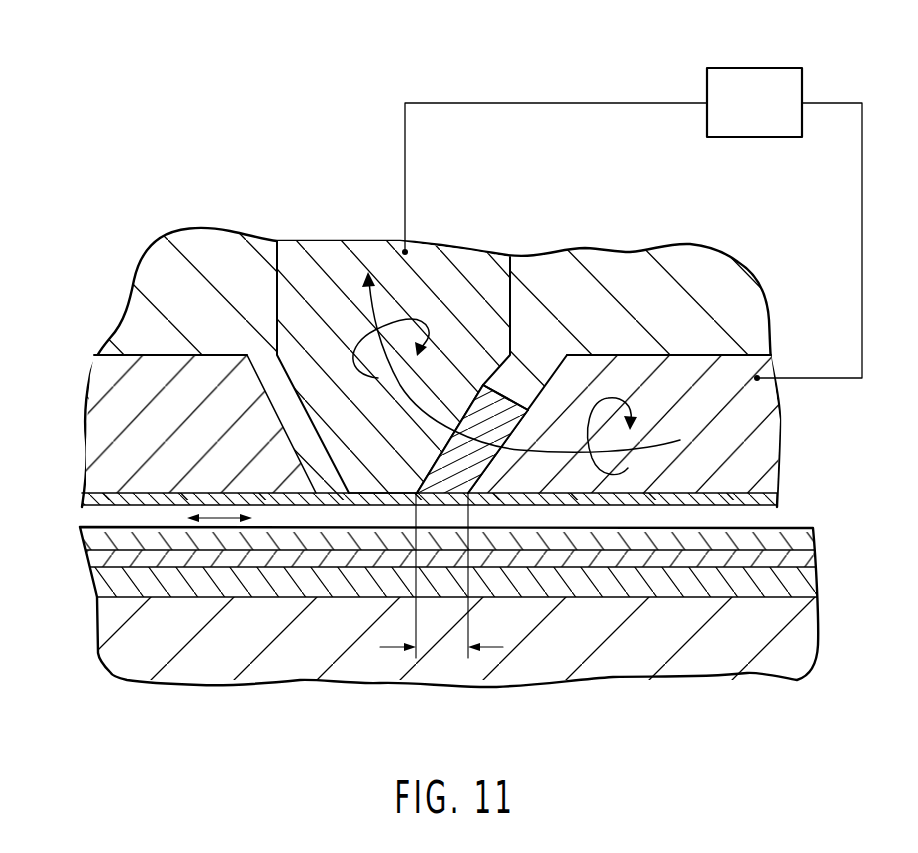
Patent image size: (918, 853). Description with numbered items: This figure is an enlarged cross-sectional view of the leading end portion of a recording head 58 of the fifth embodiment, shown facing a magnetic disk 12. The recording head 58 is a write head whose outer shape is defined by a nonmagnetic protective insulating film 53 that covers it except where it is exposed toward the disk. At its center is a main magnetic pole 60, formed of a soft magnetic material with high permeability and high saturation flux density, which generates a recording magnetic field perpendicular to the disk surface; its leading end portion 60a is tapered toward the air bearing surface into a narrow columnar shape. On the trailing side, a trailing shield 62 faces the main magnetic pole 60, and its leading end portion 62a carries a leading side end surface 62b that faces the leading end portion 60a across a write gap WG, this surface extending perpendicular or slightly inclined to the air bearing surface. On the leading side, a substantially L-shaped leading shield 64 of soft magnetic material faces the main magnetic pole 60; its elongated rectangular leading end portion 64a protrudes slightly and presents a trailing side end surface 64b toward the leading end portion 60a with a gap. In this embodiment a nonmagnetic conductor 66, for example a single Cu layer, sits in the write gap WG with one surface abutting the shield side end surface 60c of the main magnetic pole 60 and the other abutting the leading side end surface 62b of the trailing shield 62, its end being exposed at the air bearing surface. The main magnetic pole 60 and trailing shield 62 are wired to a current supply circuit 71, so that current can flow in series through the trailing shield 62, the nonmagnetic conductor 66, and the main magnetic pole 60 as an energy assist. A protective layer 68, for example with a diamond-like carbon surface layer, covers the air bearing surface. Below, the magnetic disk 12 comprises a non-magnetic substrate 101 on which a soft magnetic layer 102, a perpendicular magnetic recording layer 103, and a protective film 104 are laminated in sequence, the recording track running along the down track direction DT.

The magnetic disk 12 is at (750, 687).
The protective insulating film 53 is at (682, 263).
The recording head 58 is at (244, 213).
The main magnetic pole 60 is at (338, 258).
The leading end portion of the main magnetic pole 60a is at (368, 453).
The shield side end surface of the main magnetic pole 60c is at (513, 287).
The trailing shield 62 is at (763, 417).
The leading end portion of the trailing shield 62a is at (703, 373).
The leading side end surface of the trailing shield 62b is at (548, 378).
The leading shield 64 is at (93, 424).
The leading end portion of the leading shield 64a is at (130, 367).
The trailing side end surface of the leading shield 64b is at (283, 430).
The nonmagnetic conductor 66 is at (485, 387).
The protective layer 68 is at (763, 497).
The current supply circuit 71 is at (748, 68).
The substrate 101 is at (807, 628).
The soft magnetic layer 102 is at (805, 580).
The perpendicular magnetic recording layer 103 is at (800, 558).
The protective film 104 is at (810, 538).
The down track direction DT is at (223, 522).
The write gap WG is at (441, 587).